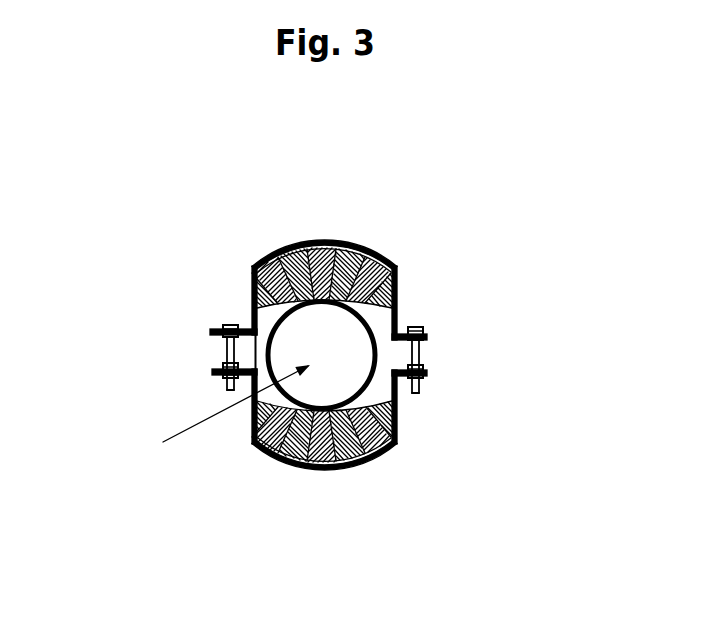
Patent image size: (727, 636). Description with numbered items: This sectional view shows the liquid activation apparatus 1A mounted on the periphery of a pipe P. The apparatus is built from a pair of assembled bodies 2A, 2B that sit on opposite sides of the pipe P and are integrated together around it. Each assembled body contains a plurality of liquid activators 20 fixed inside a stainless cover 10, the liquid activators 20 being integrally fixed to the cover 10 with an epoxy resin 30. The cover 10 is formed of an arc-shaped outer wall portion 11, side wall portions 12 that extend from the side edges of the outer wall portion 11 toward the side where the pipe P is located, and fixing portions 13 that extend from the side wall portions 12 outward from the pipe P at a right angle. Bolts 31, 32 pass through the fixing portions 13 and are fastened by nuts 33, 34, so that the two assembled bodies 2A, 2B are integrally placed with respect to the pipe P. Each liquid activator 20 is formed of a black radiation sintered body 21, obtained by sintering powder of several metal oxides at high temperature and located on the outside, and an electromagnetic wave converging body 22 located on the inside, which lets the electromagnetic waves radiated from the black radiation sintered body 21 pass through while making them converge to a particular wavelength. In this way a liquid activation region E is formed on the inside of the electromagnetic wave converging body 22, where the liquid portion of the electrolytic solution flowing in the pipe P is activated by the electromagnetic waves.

The liquid activation apparatus 1A is at (309, 359).
The assembled body 2A is at (447, 235).
The assembled body 2B is at (443, 428).
The cover 10 is at (332, 359).
The outer wall portion 11 is at (332, 245).
The side wall portion 12 is at (250, 303).
The fixing portion 13 is at (223, 333).
The liquid activator 20 is at (341, 345).
The black radiation sintered body 21 is at (252, 268).
The electromagnetic wave converging body 22 is at (250, 288).
The epoxy resin 30 is at (388, 284).
The bolt 31 is at (187, 359).
The bolt 32 is at (462, 361).
The nut 33 is at (222, 362).
The nut 34 is at (428, 365).
The pipe P is at (378, 325).
The liquid activation region E is at (227, 410).